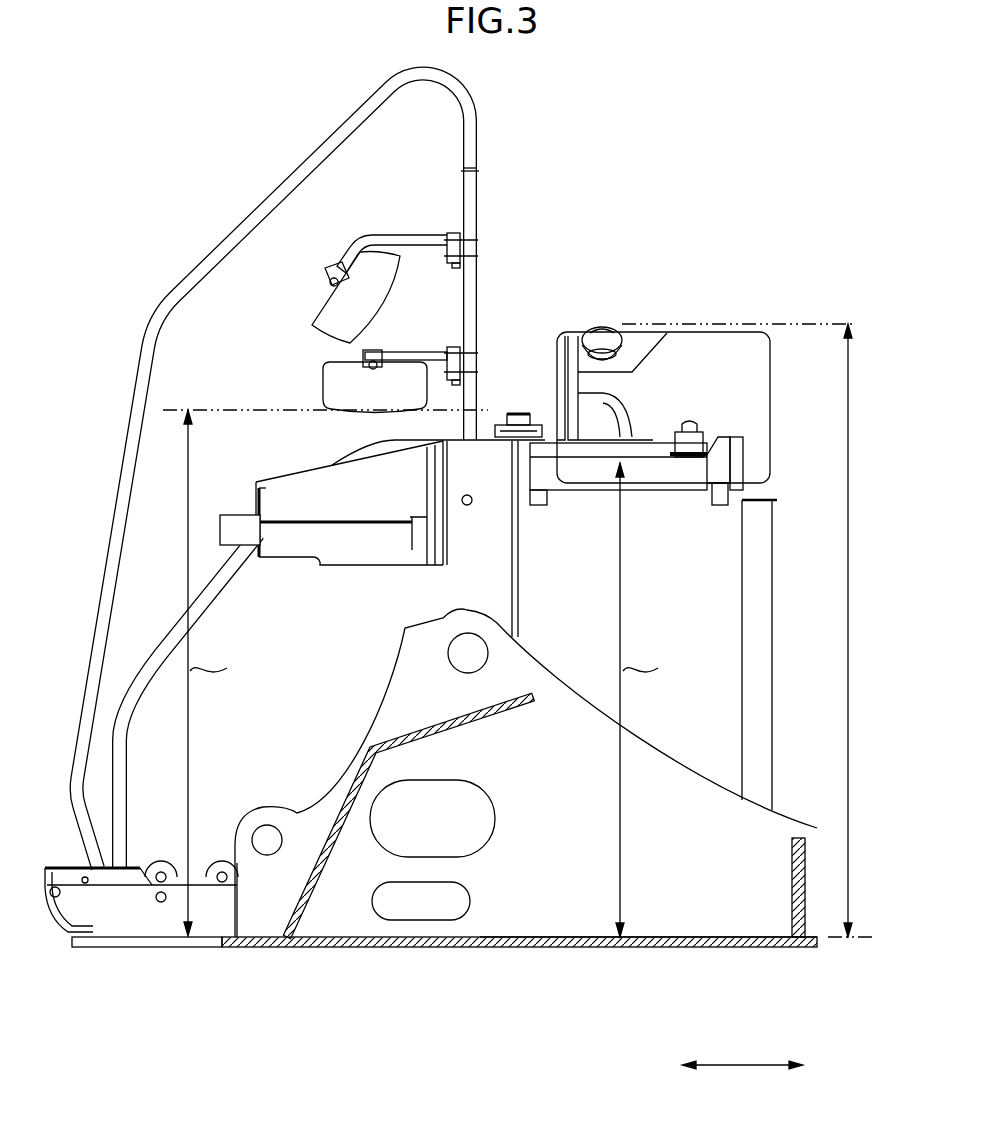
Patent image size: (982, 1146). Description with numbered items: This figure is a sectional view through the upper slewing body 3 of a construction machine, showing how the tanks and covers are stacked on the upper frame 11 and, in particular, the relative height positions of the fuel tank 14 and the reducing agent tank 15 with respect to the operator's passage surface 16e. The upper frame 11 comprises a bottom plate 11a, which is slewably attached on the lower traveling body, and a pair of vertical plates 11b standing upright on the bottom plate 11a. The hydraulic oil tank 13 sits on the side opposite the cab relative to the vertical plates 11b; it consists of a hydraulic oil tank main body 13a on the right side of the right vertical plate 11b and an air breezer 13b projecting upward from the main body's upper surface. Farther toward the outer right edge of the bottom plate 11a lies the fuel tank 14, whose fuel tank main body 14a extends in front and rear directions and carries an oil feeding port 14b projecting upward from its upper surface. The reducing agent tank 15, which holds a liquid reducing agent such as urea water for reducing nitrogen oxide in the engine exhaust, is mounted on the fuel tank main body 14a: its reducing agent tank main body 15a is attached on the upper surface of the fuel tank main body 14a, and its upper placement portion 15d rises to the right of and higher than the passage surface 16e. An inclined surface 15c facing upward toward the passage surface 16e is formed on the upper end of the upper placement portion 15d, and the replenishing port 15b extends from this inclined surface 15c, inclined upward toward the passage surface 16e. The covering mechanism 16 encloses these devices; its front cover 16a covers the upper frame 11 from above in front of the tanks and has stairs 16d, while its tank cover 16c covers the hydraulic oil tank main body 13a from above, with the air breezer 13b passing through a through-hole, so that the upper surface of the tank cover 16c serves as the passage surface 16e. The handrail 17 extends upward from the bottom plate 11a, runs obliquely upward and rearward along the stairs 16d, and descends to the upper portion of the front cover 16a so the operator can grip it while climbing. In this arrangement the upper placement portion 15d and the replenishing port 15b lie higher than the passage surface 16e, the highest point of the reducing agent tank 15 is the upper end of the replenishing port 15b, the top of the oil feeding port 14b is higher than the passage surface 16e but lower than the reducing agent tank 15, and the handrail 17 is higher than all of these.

The upper slewing body 3 is at (466, 571).
The upper frame 11 is at (431, 963).
The bottom plate 11a is at (437, 950).
The vertical plates 11b is at (535, 897).
The hydraulic oil tank 13 is at (526, 690).
The hydraulic oil tank main body 13a is at (678, 727).
The air breezer 13b is at (688, 420).
The fuel tank 14 is at (751, 718).
The fuel tank main body 14a is at (757, 790).
The oil feeding port 14b is at (520, 412).
The reducing agent tank 15 is at (668, 373).
The reducing agent tank main body 15a is at (663, 407).
The replenishing port 15b is at (600, 324).
The inclined surface 15c is at (640, 343).
The upper placement portion 15d is at (552, 383).
The covering mechanism 16 is at (395, 652).
The front cover 16a is at (160, 683).
The tank cover 16c is at (636, 496).
The stairs 16d is at (237, 515).
The passage surface 16e is at (583, 450).
The handrail 17 is at (314, 148).